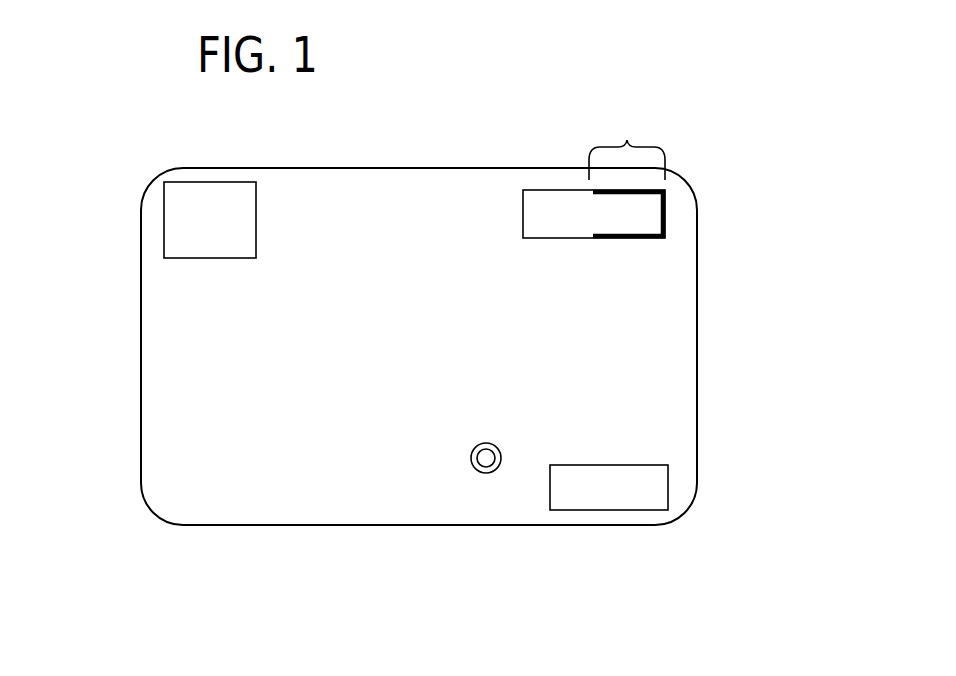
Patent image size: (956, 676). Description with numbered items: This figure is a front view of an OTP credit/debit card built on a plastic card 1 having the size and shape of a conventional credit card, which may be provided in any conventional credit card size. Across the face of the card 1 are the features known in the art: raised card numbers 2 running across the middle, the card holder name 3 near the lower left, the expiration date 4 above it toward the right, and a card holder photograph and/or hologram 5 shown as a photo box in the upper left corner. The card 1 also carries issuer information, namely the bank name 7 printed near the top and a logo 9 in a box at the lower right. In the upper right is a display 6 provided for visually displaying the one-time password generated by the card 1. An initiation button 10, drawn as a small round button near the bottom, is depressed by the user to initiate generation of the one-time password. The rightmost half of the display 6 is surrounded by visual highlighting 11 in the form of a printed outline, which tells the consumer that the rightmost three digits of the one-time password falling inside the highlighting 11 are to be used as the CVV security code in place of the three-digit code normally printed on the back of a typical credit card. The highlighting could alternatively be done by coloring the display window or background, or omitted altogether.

The plastic card 1 is at (697, 292).
The raised card numbers 2 is at (173, 302).
The card holder name 3 is at (298, 495).
The expiration date 4 is at (612, 370).
The card holder photograph and/or hologram 5 is at (162, 202).
The display 6 is at (667, 205).
The bank name 7 is at (377, 217).
The logo 9 is at (668, 482).
The initiation button 10 is at (483, 473).
The visual highlighting 11 is at (627, 140).